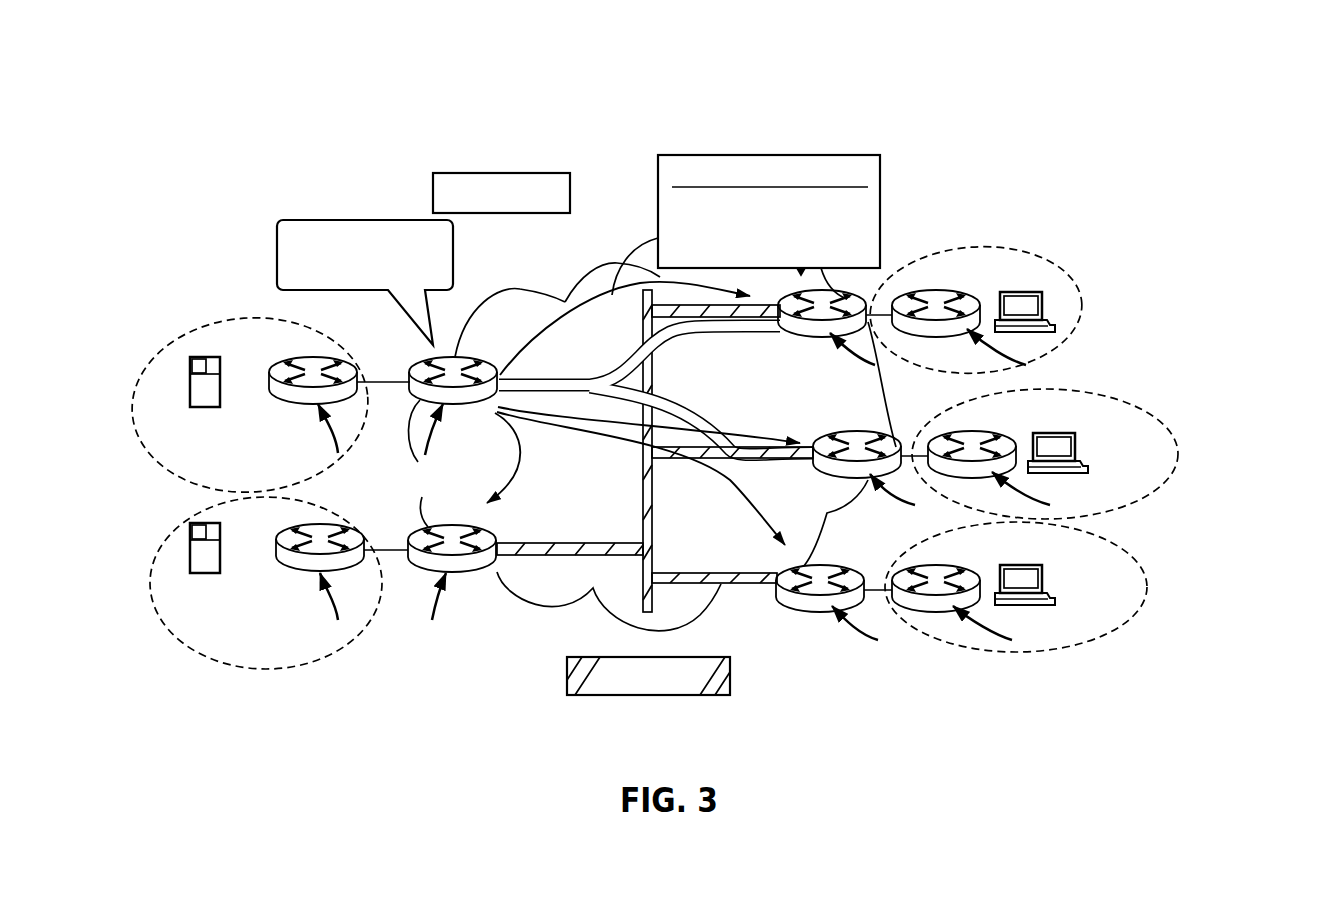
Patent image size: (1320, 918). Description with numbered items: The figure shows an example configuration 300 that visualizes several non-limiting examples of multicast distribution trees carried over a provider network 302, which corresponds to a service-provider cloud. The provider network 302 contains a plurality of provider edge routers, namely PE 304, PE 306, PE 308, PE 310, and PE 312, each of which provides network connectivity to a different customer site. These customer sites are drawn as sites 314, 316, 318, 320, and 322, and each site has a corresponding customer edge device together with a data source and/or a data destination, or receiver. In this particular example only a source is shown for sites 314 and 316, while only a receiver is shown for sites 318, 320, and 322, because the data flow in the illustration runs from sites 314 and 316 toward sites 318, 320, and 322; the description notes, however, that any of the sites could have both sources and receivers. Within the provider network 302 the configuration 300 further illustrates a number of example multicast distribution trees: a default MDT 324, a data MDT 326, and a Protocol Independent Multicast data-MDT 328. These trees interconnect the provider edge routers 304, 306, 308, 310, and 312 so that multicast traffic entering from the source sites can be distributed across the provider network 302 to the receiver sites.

The example configuration 300 is at (993, 114).
The provider network 302 is at (544, 597).
The provider edge router 304 is at (448, 553).
The provider edge router 306 is at (420, 362).
The provider edge router 308 is at (855, 297).
The provider edge router 310 is at (849, 442).
The provider edge router 312 is at (802, 590).
The customer site 314 is at (133, 412).
The customer site 316 is at (152, 588).
The customer site 318 is at (1062, 264).
The customer site 320 is at (1178, 442).
The customer site 322 is at (1147, 588).
The default MDT 324 is at (655, 451).
The data MDT 326 is at (630, 370).
The PIM data-MDT 328 is at (578, 305).